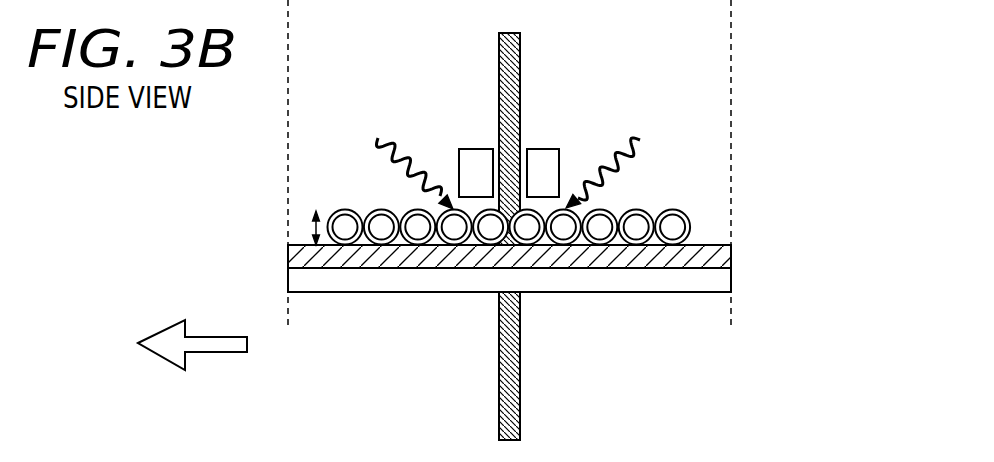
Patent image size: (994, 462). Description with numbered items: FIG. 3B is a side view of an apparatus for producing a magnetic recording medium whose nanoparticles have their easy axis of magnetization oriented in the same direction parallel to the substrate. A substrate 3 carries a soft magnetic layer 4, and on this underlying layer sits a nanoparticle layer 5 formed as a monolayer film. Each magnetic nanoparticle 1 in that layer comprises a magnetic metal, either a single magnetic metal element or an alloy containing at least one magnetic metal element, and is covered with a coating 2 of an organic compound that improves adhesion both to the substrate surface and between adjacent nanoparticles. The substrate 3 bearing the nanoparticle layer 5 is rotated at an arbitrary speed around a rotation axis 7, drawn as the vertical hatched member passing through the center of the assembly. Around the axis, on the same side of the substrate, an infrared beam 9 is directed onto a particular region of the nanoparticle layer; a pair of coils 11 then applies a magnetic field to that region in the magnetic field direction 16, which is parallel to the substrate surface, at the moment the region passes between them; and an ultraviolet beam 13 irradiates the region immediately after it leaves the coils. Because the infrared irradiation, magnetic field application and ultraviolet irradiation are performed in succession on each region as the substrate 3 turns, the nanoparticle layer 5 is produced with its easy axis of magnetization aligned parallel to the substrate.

The magnetic nanoparticle 1 is at (675, 222).
The coating 2 is at (690, 228).
The substrate 3 is at (722, 283).
The soft magnetic layer 4 is at (722, 258).
The nanoparticle layer 5 is at (316, 212).
The rotation axis 7 is at (498, 58).
The infrared beam 9 is at (622, 140).
The coils 11 is at (475, 149).
The ultraviolet beam 13 is at (388, 137).
The magnetic field direction 16 is at (227, 337).